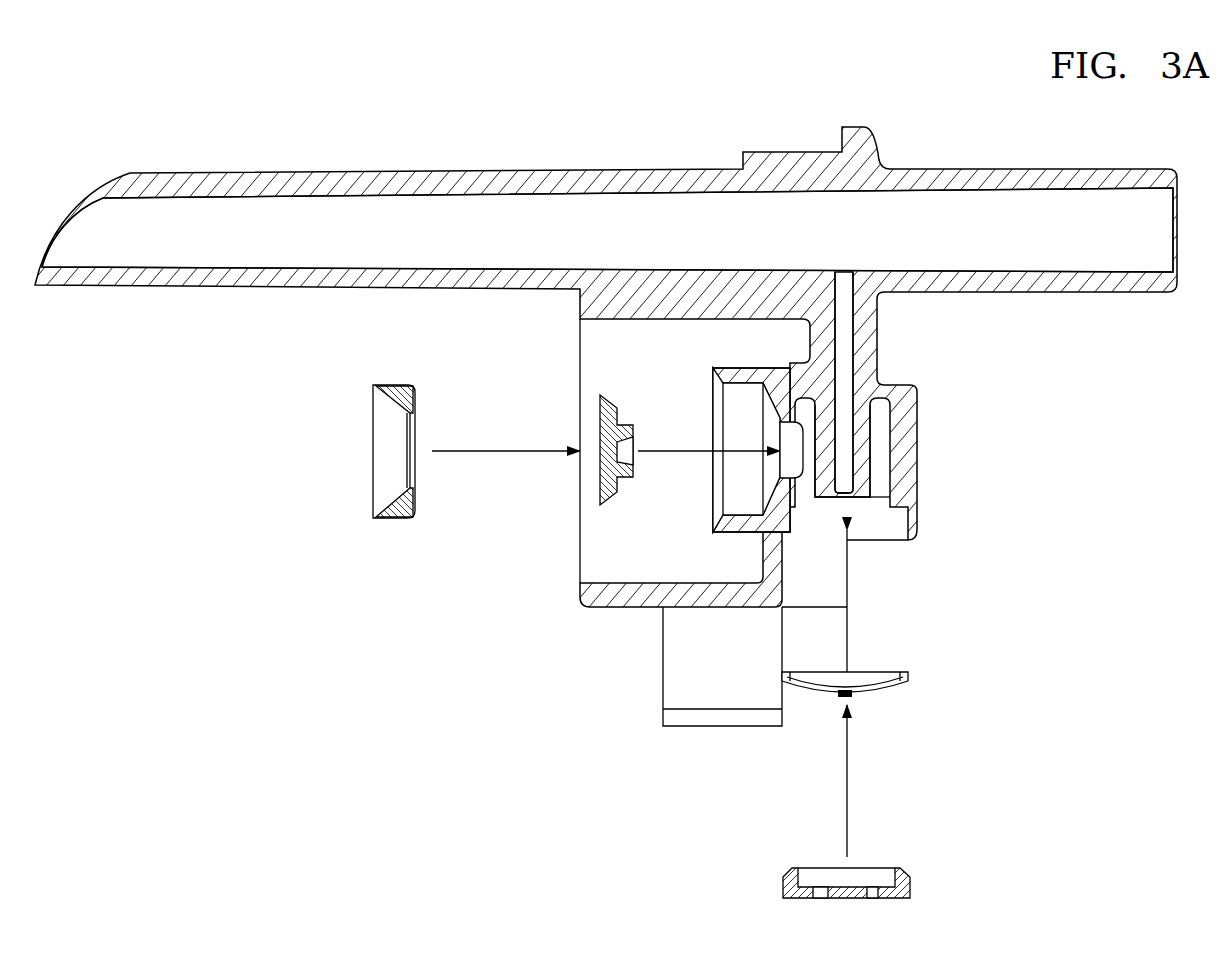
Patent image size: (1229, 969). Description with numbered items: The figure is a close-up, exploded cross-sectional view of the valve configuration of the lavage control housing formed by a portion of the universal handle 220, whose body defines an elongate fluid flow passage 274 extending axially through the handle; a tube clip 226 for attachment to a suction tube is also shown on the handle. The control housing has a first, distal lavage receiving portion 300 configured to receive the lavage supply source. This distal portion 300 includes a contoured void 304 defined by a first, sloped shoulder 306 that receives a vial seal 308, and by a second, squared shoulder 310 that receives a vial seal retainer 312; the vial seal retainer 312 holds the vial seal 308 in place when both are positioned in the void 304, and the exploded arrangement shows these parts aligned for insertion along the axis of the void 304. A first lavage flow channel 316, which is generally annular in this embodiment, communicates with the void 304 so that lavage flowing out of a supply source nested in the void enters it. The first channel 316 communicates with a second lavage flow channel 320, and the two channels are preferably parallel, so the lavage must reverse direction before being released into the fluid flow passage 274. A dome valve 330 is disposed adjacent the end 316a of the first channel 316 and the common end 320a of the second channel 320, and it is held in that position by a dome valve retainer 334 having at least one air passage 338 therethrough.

The universal handle 220 is at (615, 172).
The fluid flow passage 274 is at (848, 217).
The tube clip 226 is at (673, 720).
The first, distal lavage receiving portion 300 is at (623, 388).
The contoured void 304 is at (738, 405).
The first, sloped shoulder 306 is at (778, 398).
The vial seal 308 is at (600, 497).
The second, squared shoulder 310 is at (735, 498).
The vial seal retainer 312 is at (383, 390).
The first lavage flow channel 316 is at (880, 400).
The end of first lavage flow channel 316a is at (887, 497).
The second lavage flow channel 320 is at (843, 375).
The common end of second lavage flow channel 320a is at (848, 497).
The dome valve 330 is at (906, 676).
The dome valve retainer 334 is at (903, 883).
The air passage 338 is at (820, 898).